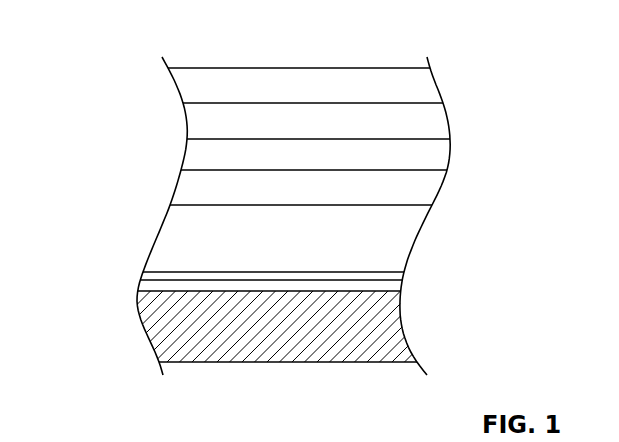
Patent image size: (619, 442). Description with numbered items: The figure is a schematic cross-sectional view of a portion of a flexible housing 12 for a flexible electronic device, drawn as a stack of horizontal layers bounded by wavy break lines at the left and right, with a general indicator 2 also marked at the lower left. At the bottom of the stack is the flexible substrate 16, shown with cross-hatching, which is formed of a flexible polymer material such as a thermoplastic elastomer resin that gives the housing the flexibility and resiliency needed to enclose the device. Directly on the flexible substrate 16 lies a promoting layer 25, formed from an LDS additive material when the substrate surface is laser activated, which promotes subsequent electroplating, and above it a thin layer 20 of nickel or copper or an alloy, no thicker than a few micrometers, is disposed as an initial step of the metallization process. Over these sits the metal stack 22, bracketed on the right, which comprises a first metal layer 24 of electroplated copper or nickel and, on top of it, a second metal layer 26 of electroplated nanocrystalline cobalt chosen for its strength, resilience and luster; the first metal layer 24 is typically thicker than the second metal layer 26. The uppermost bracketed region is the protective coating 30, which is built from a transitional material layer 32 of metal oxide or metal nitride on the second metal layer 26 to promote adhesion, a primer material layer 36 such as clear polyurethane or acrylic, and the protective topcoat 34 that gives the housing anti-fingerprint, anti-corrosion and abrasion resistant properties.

The component 2 is at (47, 404).
The flexible housing 12 is at (82, 47).
The flexible substrate 16 is at (168, 313).
The thin layer 20 is at (146, 276).
The metal stack 22 is at (474, 172).
The first metal layer 24 is at (168, 230).
The promoting layer 25 is at (399, 285).
The second metal layer 26 is at (178, 195).
The protective coating 30 is at (467, 68).
The transitional material layer 32 is at (191, 154).
The protective topcoat 34 is at (184, 95).
The primer material layer 36 is at (189, 122).